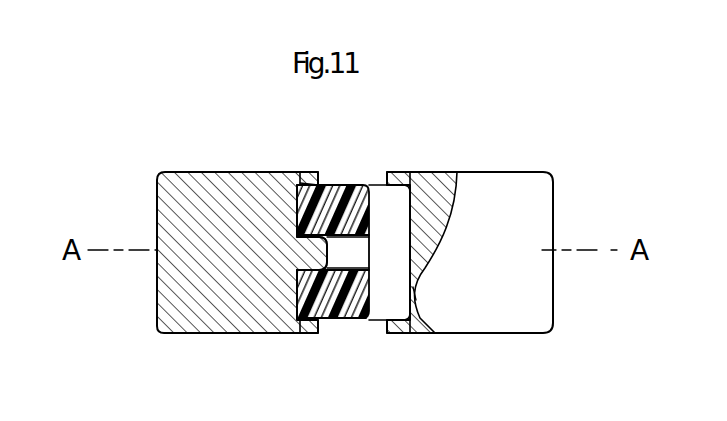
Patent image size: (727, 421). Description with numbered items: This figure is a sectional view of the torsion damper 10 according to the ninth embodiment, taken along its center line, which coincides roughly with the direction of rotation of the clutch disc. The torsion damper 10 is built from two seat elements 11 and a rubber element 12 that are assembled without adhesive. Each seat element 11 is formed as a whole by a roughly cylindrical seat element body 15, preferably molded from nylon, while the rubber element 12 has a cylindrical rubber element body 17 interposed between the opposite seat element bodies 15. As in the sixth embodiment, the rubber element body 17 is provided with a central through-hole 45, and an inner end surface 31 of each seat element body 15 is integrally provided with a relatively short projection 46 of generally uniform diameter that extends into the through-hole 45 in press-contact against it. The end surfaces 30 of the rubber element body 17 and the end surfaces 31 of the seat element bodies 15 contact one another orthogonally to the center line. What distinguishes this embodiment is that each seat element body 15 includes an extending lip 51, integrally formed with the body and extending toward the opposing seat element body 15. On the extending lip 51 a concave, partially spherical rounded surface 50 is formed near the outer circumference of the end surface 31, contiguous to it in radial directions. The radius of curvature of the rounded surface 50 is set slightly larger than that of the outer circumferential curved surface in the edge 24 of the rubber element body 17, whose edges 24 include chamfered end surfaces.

The torsion damper 10 is at (172, 146).
The seat element 11 is at (151, 168).
The rubber element 12 is at (365, 176).
The seat element body 15 is at (473, 185).
The rubber element body 17 is at (345, 318).
The edge 24 is at (303, 326).
The end surface 30 is at (300, 183).
The end surface 31 is at (364, 297).
The central through-hole 45 is at (339, 245).
The projection 46 is at (313, 247).
The rounded surface 50 is at (389, 252).
The extending lip 51 is at (317, 181).